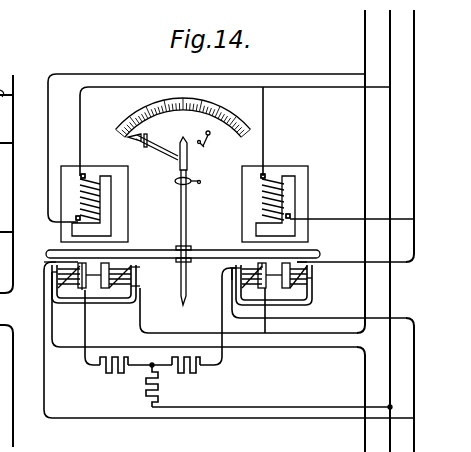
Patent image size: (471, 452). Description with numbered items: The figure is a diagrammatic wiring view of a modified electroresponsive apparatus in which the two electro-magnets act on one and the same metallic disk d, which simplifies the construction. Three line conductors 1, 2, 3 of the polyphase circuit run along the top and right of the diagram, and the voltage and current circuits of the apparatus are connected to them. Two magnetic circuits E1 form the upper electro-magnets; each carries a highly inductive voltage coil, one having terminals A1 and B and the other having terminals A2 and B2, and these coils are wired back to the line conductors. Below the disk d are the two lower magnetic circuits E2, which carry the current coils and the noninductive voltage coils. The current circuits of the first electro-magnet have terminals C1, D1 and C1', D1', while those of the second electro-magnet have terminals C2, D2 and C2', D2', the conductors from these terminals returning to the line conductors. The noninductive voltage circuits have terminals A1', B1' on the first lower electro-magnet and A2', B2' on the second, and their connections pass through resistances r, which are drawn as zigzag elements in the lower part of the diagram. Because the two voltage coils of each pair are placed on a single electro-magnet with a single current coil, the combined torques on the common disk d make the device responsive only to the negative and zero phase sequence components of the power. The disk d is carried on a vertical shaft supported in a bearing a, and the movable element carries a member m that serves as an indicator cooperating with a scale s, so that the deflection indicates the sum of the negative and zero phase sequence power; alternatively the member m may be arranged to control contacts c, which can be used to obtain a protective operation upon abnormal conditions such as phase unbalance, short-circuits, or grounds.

The line conductor 1 is at (365, 46).
The line conductor 2 is at (390, 48).
The line conductor 3 is at (414, 48).
The scale s is at (213, 111).
The member m is at (158, 148).
The contacts c is at (208, 144).
The bearing a is at (190, 182).
The metallic disk d is at (165, 250).
The magnetic circuit E1 is at (128, 193).
The magnetic circuit E2 is at (112, 304).
The resistances r is at (114, 372).
The voltage circuit terminal A1 is at (77, 184).
The voltage circuit terminal B is at (75, 218).
The voltage circuit terminal A2 is at (258, 184).
The voltage circuit terminal B2 is at (285, 212).
The current circuit terminal C1 is at (43, 256).
The current circuit terminal C1' is at (42, 272).
The current circuit terminal D1 is at (143, 269).
The current circuit terminal D1' is at (145, 286).
The noninductive voltage circuit terminal A1' is at (73, 296).
The noninductive voltage circuit terminal B1' is at (94, 287).
The noninductive voltage circuit terminal A2' is at (241, 252).
The noninductive voltage circuit terminal B2' is at (275, 287).
The current circuit terminal C2 is at (222, 269).
The current circuit terminal C2' is at (217, 280).
The current circuit terminal D2 is at (314, 257).
The current circuit terminal D2' is at (321, 275).